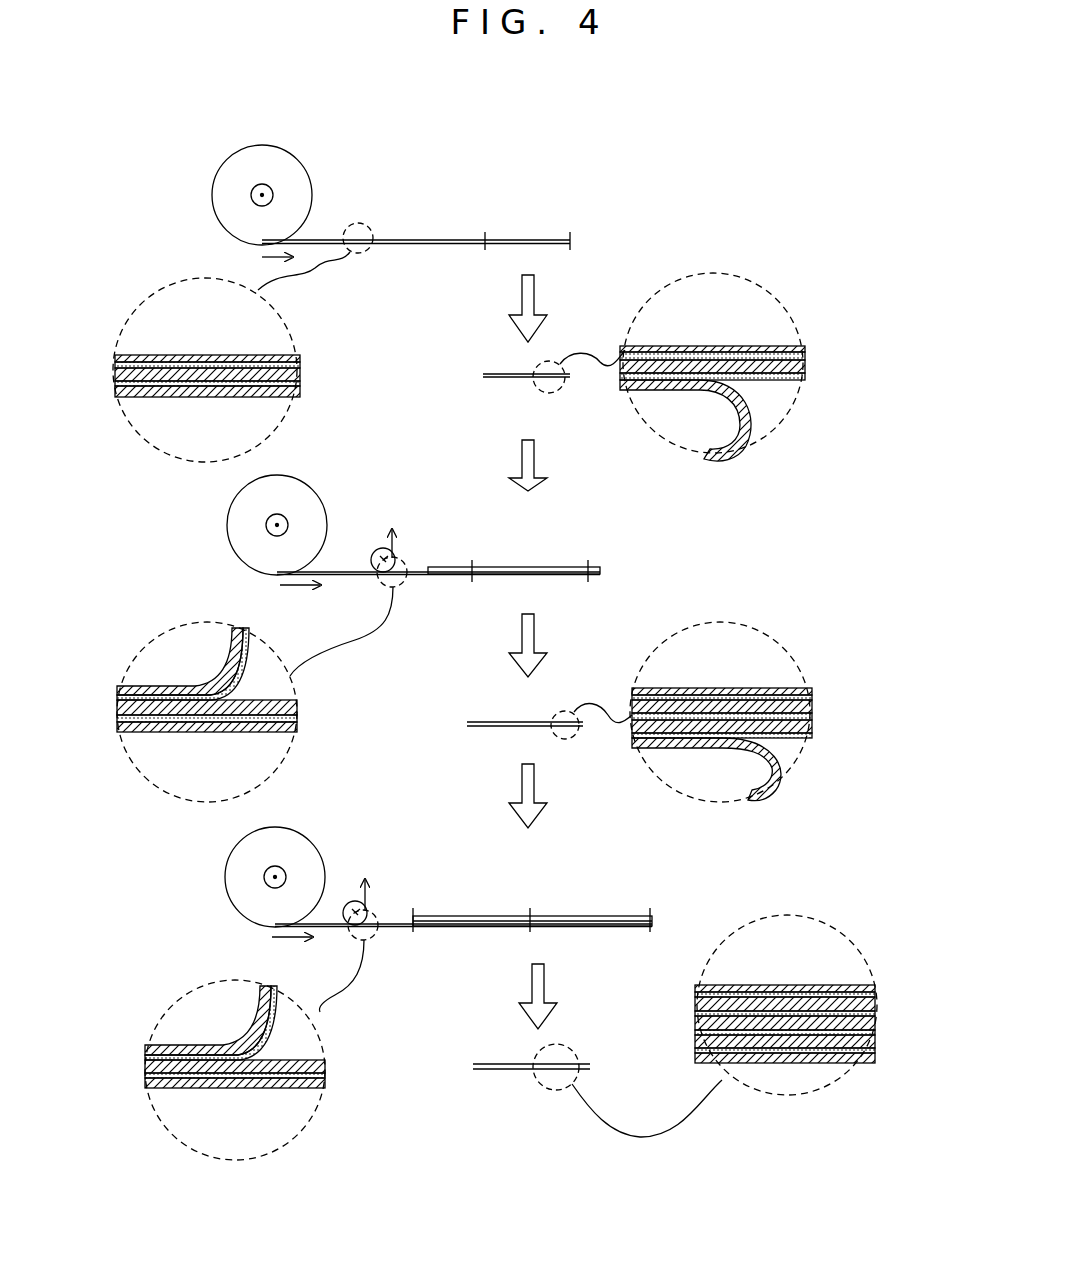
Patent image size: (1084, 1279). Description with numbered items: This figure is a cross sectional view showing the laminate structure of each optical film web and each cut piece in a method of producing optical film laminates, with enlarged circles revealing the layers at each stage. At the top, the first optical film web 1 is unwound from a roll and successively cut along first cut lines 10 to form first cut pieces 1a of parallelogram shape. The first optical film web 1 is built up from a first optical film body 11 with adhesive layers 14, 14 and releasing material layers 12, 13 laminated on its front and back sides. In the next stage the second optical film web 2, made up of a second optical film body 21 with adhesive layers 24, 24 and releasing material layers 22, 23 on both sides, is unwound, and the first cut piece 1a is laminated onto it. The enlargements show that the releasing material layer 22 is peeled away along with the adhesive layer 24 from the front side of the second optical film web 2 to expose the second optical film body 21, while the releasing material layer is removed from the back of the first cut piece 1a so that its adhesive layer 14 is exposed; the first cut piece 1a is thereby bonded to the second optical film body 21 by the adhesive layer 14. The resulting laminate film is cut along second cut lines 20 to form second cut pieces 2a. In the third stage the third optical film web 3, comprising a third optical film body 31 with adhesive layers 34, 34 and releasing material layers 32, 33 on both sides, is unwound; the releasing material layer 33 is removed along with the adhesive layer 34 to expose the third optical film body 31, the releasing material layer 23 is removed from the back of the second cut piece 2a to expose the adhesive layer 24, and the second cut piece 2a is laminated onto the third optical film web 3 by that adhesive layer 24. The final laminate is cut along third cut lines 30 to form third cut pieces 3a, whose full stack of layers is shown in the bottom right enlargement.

The first optical film web 1 is at (258, 160).
The second optical film web 2 is at (240, 527).
The third optical film web 3 is at (298, 852).
The first cut lines 10 is at (486, 232).
The second cut lines 20 is at (470, 565).
The third cut lines 30 is at (413, 914).
The first cut piece 1a is at (478, 377).
The second cut piece 2a is at (480, 737).
The third cut piece 3a is at (487, 1082).
The first optical film body 11 is at (300, 374).
The releasing material layer 12 is at (298, 356).
The releasing material layer 13 is at (295, 392).
The adhesive layer 14 is at (300, 365).
The second optical film body 21 is at (298, 707).
The releasing material layer 22 is at (232, 648).
The releasing material layer 23 is at (295, 731).
The adhesive layer 24 is at (248, 652).
The third optical film body 31 is at (325, 1065).
The releasing material layer 32 is at (320, 1086).
The releasing material layer 33 is at (260, 1008).
The adhesive layer 34 is at (277, 1010).